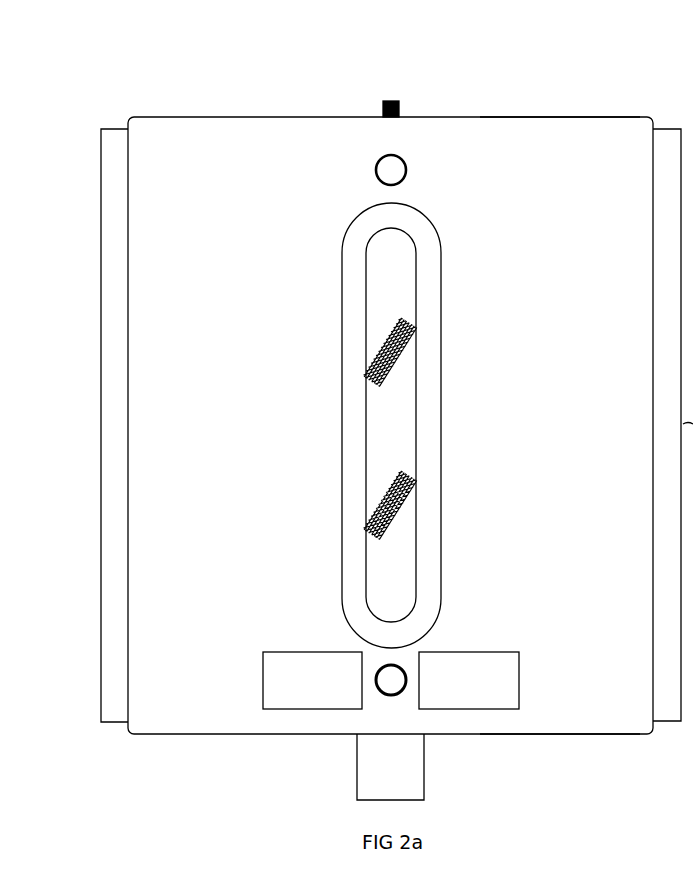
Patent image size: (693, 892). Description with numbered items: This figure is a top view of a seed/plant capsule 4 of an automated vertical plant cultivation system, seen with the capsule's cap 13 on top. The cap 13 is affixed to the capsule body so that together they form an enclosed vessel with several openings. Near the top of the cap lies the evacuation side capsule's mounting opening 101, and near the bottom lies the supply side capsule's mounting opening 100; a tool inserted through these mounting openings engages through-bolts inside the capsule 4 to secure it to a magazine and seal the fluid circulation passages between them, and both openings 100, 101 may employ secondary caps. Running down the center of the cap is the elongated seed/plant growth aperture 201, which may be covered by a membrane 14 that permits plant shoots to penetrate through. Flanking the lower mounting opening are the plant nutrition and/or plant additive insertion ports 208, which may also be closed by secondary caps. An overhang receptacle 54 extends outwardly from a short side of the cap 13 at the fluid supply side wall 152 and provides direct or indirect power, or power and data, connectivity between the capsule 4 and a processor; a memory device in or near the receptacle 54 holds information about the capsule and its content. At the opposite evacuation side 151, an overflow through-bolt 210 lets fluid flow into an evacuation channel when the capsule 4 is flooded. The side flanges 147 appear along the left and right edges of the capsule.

The seed/plant capsule 4 is at (212, 68).
The capsule's cap 13 is at (281, 271).
The membrane 14 is at (366, 372).
The overhang receptacle 54 is at (358, 767).
The supply side capsule's mounting opening 100 is at (392, 695).
The evacuation side capsule's mounting opening 101 is at (392, 170).
The side flange 147 is at (103, 424).
The evacuation side 151 is at (560, 117).
The fluid supply side wall 152 is at (592, 737).
The seed/plant growth aperture 201 is at (410, 433).
The plant nutrition and/or plant additive insertion port 208 is at (261, 681).
The overflow through-bolt 210 is at (390, 101).